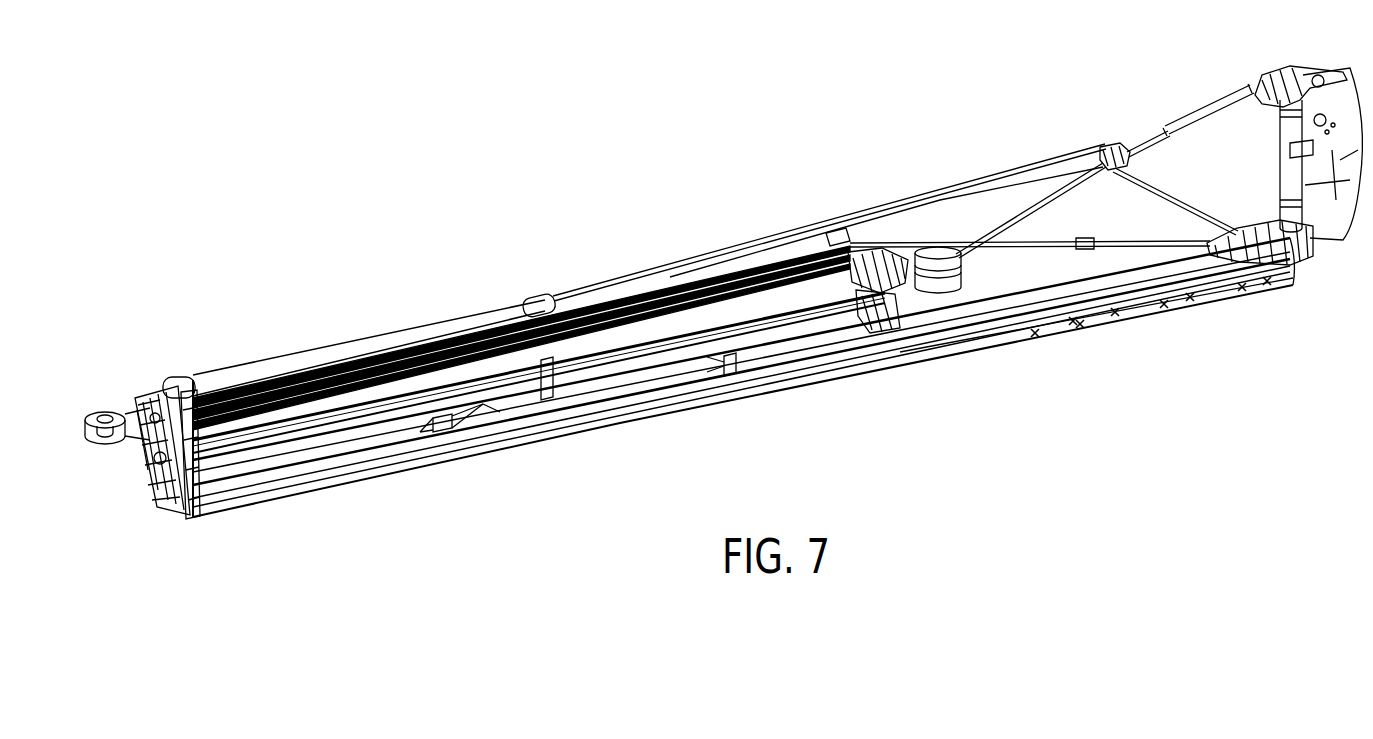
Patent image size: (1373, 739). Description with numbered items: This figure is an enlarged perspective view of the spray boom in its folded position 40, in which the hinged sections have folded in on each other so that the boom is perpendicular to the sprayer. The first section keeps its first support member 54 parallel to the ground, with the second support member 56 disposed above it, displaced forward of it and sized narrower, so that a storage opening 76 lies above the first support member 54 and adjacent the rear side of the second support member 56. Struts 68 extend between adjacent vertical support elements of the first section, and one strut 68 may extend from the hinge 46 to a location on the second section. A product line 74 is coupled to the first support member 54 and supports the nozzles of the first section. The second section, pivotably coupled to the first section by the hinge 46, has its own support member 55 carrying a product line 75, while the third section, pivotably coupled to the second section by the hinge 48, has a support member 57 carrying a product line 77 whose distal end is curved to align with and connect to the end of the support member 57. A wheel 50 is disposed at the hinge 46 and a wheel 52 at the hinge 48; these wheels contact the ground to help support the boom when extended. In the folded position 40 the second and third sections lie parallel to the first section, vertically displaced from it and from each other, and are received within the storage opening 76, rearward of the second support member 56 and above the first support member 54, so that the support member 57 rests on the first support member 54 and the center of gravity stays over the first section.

The folded position 40 is at (426, 266).
The hinge 46 is at (152, 497).
The hinge 48 is at (900, 292).
The wheel 50 is at (112, 445).
The wheel 52 is at (965, 292).
The first support member 54 is at (1050, 320).
The support member 55 is at (593, 302).
The second support member 56 is at (1007, 187).
The support member 57 is at (360, 398).
The struts 68 is at (1037, 197).
The product line 74 is at (1122, 322).
The product line 75 is at (689, 280).
The storage opening 76 is at (190, 503).
The product line 77 is at (455, 420).